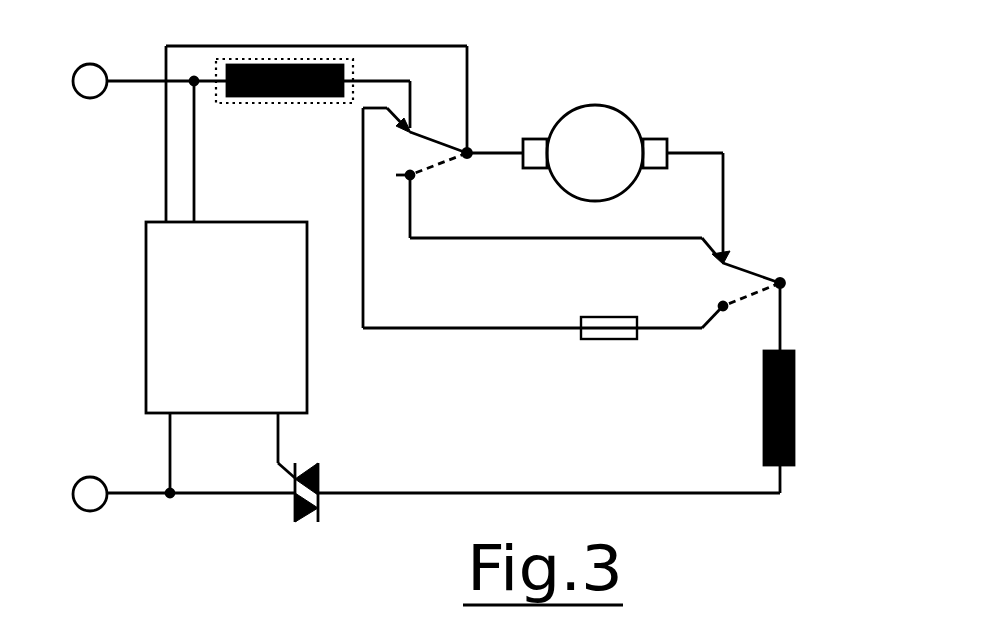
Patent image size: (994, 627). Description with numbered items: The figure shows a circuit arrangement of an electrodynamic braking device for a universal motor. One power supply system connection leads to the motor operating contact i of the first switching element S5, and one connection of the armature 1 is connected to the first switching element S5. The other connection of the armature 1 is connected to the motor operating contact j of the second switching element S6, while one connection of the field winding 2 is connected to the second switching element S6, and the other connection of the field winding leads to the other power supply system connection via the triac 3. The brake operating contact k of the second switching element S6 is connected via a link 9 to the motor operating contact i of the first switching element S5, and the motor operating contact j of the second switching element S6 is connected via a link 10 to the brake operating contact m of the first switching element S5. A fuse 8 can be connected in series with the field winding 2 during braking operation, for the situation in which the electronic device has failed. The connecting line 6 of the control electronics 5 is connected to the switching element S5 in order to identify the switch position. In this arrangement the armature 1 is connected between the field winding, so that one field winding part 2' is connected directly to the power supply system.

The armature 1 is at (607, 105).
The field winding 2 is at (753, 388).
The field winding part 2' is at (313, 109).
The triac 3 is at (303, 520).
The control electronics 5 is at (238, 347).
The connecting line 6 is at (165, 117).
The fuse 8 is at (617, 341).
The link 9 is at (457, 328).
The link 10 is at (565, 239).
The first switching element S5 is at (469, 151).
The second switching element S6 is at (782, 281).
The motor operating contact i is at (412, 130).
The motor operating contact j is at (725, 261).
The brake operating contact k is at (725, 309).
The brake operating contact m is at (413, 178).